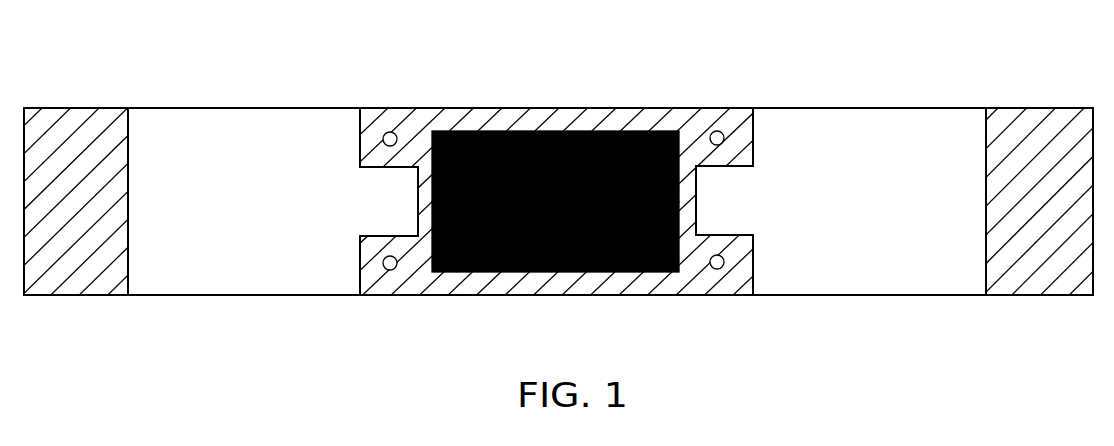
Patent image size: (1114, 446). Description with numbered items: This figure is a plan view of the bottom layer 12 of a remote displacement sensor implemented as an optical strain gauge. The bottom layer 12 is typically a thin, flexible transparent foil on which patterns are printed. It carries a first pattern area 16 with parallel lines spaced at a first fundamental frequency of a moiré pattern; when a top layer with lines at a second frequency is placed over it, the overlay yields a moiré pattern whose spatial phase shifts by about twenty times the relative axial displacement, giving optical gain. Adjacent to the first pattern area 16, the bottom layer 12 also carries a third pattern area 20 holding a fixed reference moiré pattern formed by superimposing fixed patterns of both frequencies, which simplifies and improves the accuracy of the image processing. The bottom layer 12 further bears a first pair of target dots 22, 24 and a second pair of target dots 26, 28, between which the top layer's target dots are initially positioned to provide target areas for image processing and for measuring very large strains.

The bottom layer 12 is at (852, 105).
The first pattern area 16 is at (612, 271).
The third pattern area 20 is at (599, 132).
The target dot 22 is at (383, 138).
The target dot 24 is at (383, 263).
The target dot 26 is at (724, 139).
The target dot 28 is at (724, 262).